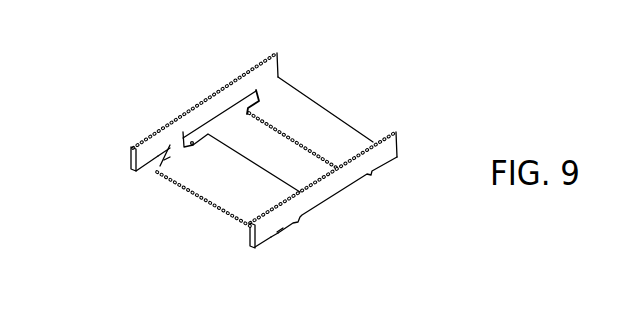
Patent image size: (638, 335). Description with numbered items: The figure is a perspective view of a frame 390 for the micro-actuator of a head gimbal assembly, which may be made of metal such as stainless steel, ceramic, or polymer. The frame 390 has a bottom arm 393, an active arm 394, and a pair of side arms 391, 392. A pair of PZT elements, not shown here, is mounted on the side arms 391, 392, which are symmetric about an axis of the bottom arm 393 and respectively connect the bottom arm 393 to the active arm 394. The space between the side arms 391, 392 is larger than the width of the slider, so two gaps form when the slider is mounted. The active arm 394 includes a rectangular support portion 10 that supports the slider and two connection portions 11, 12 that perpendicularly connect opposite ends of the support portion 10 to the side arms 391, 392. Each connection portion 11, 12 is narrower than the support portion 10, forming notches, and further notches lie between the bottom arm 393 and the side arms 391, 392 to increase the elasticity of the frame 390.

The frame 390 is at (72, 88).
The side arm 391 is at (205, 101).
The side arm 392 is at (327, 184).
The bottom arm 393 is at (320, 130).
The support portion 10 is at (208, 183).
The connection portion 11 is at (156, 172).
The connection portion 12 is at (269, 241).
The active arm 394 is at (216, 294).